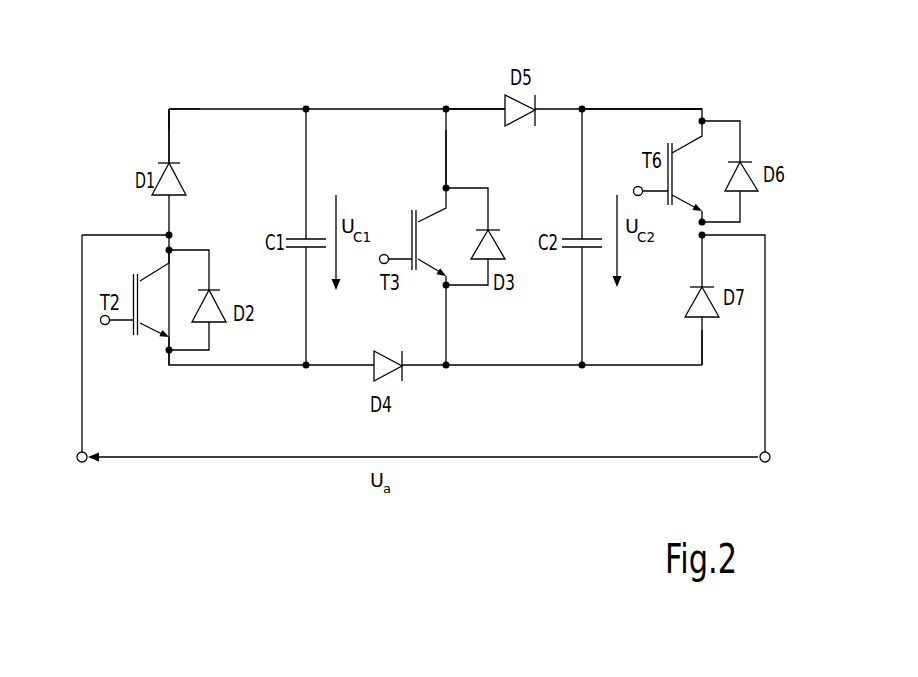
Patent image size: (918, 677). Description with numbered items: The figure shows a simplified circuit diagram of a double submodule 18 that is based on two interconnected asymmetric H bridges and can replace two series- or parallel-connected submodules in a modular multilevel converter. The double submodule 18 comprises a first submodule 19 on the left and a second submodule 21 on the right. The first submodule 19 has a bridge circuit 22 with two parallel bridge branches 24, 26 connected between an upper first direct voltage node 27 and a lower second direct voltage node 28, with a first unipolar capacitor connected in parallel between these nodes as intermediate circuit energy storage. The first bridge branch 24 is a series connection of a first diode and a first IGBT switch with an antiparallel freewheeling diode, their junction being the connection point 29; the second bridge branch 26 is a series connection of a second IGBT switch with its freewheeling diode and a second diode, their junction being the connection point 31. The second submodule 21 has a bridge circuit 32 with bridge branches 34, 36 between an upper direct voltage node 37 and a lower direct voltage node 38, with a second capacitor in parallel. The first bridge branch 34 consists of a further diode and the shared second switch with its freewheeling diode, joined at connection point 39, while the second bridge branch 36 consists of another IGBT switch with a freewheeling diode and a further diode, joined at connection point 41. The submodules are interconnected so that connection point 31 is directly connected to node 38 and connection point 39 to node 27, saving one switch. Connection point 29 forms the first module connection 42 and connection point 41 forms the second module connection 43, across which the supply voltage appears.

The double submodule 18 is at (118, 82).
The first submodule 19 is at (174, 88).
The second submodule 21 is at (722, 86).
The bridge circuit 22 is at (135, 366).
The first bridge branch 24 is at (169, 132).
The second bridge branch 26 is at (447, 150).
The first direct voltage node 27 is at (306, 109).
The second direct voltage node 28 is at (305, 366).
The connection point 29 is at (168, 232).
The connection point 31 is at (446, 366).
The bridge circuit 32 is at (714, 376).
The first bridge branch 34 is at (472, 108).
The second bridge branch 36 is at (672, 108).
The first direct voltage node 37 is at (582, 108).
The second direct voltage node 38 is at (583, 366).
The connection point 39 is at (446, 108).
The connection point 41 is at (707, 233).
The first module connection 42 is at (76, 462).
The second module connection 43 is at (767, 463).